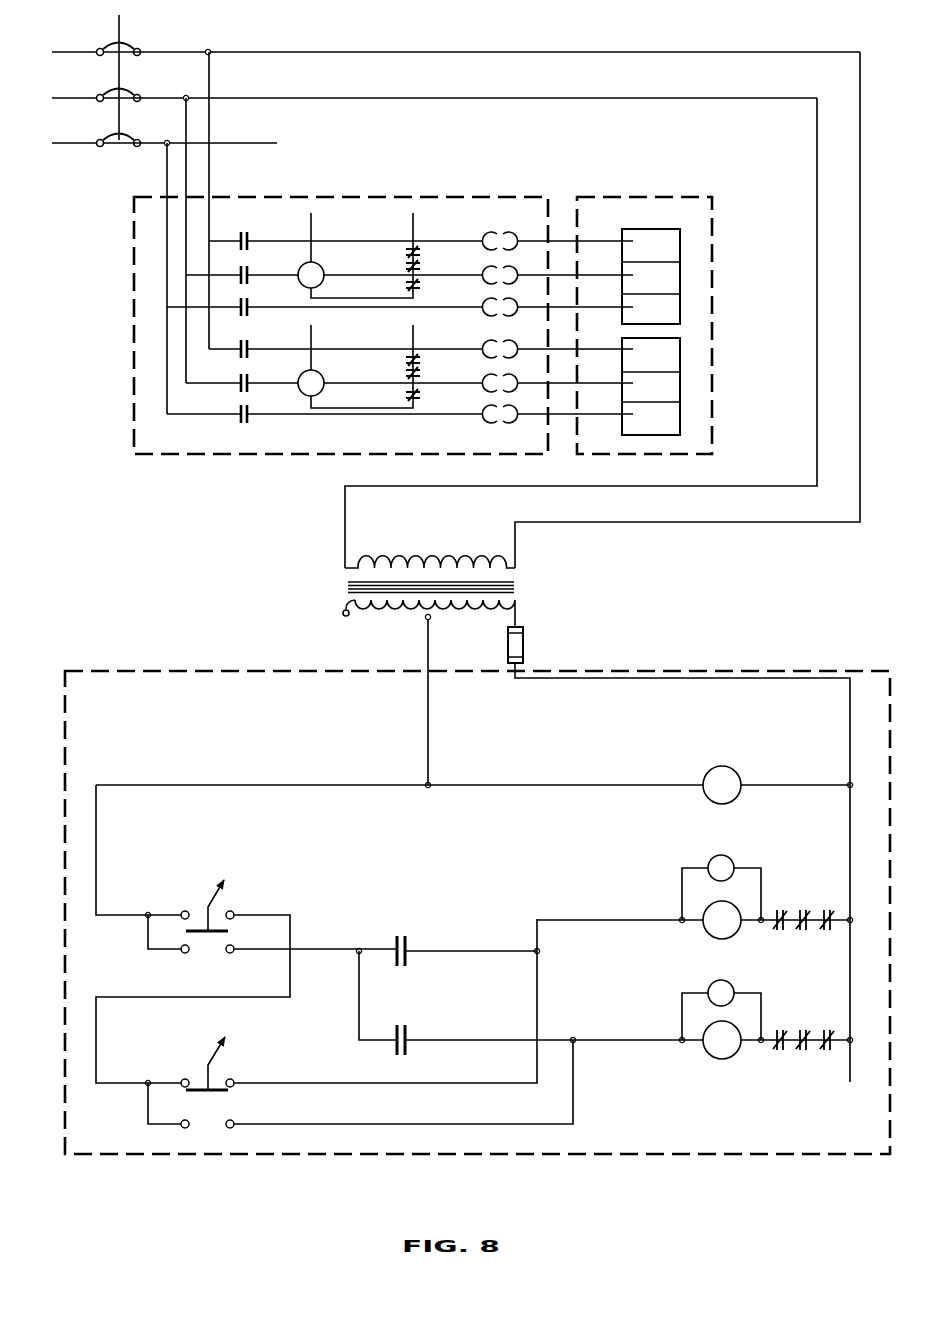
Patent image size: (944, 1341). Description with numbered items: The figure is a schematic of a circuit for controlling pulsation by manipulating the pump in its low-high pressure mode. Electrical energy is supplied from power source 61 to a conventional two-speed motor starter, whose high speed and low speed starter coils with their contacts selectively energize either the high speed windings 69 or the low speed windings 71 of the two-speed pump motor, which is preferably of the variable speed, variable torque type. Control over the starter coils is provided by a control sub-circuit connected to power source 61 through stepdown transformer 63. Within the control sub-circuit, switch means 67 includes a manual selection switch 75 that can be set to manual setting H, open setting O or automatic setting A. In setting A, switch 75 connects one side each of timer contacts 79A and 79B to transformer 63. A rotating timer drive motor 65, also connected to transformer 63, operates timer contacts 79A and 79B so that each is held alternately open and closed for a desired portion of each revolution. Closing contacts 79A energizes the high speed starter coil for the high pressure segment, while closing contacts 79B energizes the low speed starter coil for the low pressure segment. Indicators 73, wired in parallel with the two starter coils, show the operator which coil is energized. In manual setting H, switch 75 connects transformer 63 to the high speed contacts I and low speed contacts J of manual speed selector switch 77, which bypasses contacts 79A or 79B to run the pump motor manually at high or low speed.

The power source 61 is at (34, 103).
The stepdown transformer 63 is at (519, 586).
The timer drive motor 65 is at (706, 772).
The switch means 67 is at (90, 938).
The high speed windings 69 is at (683, 244).
The low speed windings 71 is at (683, 359).
The indicators 73 is at (733, 857).
The manual selection switch 75 is at (189, 904).
The manual speed selector switch 77 is at (194, 1073).
The timer contacts 79A is at (407, 947).
The timer contacts 79B is at (407, 1035).